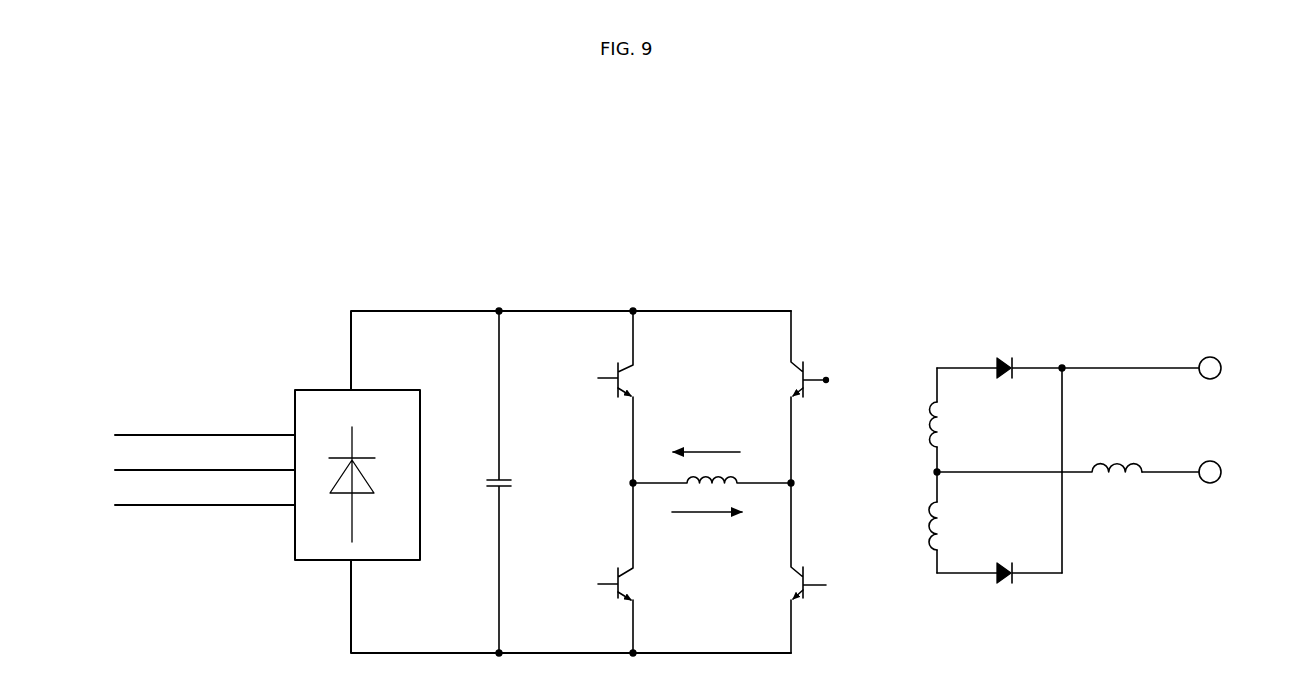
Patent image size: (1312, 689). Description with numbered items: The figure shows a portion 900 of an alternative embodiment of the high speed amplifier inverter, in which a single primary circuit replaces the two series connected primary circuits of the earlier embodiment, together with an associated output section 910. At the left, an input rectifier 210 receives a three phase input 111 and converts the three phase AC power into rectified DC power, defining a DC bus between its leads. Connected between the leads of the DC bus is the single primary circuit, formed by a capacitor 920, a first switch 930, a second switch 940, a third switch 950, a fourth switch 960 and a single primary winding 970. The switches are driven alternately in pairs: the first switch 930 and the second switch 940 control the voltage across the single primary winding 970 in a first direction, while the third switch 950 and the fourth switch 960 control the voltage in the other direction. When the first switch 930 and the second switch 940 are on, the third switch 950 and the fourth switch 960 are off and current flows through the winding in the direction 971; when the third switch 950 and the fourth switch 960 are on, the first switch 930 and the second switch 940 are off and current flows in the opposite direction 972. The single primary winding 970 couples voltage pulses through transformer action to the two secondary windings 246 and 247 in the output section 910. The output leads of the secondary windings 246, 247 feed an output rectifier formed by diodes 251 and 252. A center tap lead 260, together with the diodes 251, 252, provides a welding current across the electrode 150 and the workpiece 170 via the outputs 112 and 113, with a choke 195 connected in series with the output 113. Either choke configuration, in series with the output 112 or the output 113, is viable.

The portion of the high speed amplifier inverter 900 is at (330, 236).
The output section 910 is at (1153, 260).
The three phase input 111 is at (118, 412).
The input rectifier 210 is at (323, 342).
The capacitor 920 is at (500, 478).
The first switch S1 930 is at (618, 364).
The second switch S2 940 is at (803, 598).
The third switch S3 950 is at (803, 362).
The fourth switch S4 960 is at (618, 570).
The single primary winding 970 is at (740, 482).
The direction of current flow 971 is at (705, 515).
The opposite direction of current flow 972 is at (722, 450).
The secondary winding 246 is at (931, 400).
The secondary winding 247 is at (928, 527).
The diode 251 is at (1006, 358).
The diode 252 is at (1006, 585).
The center tap lead 260 is at (983, 472).
The output 112 is at (1112, 368).
The output 113 is at (1178, 474).
The choke 195 is at (1113, 466).
The electrode 150 is at (1213, 357).
The workpiece 170 is at (1207, 484).